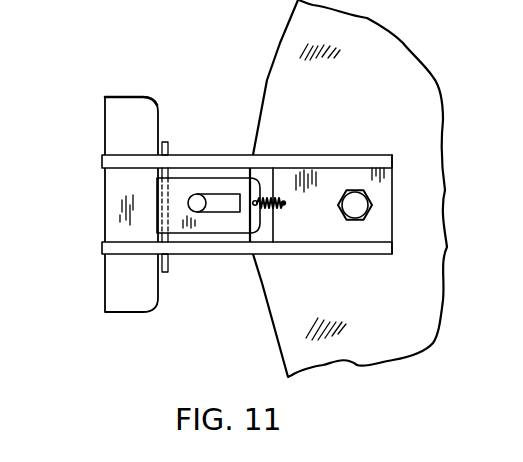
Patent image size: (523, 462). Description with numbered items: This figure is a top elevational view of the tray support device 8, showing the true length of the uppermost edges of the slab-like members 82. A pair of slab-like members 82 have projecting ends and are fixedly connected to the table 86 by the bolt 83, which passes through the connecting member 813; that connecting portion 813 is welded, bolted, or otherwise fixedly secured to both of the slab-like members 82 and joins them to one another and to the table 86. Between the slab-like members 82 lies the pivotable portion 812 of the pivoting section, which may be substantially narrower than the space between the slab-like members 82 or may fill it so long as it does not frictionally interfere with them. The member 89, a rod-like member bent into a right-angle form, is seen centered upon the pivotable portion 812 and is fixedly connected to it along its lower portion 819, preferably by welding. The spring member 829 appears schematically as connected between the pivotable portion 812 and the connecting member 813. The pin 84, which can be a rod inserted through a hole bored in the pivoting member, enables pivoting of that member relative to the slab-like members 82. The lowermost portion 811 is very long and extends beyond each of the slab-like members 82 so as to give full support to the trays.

The tray support device 8 is at (271, 174).
The lowermost portion 811 is at (105, 188).
The slab-like members 82 is at (337, 159).
The pin 84 is at (166, 142).
The member 89 is at (197, 194).
The lower portion 819 is at (219, 200).
The spring member 829 is at (265, 200).
The pivotable portion 812 is at (220, 255).
The connecting member 813 is at (331, 232).
The bolt 83 is at (371, 201).
The table 86 is at (385, 316).